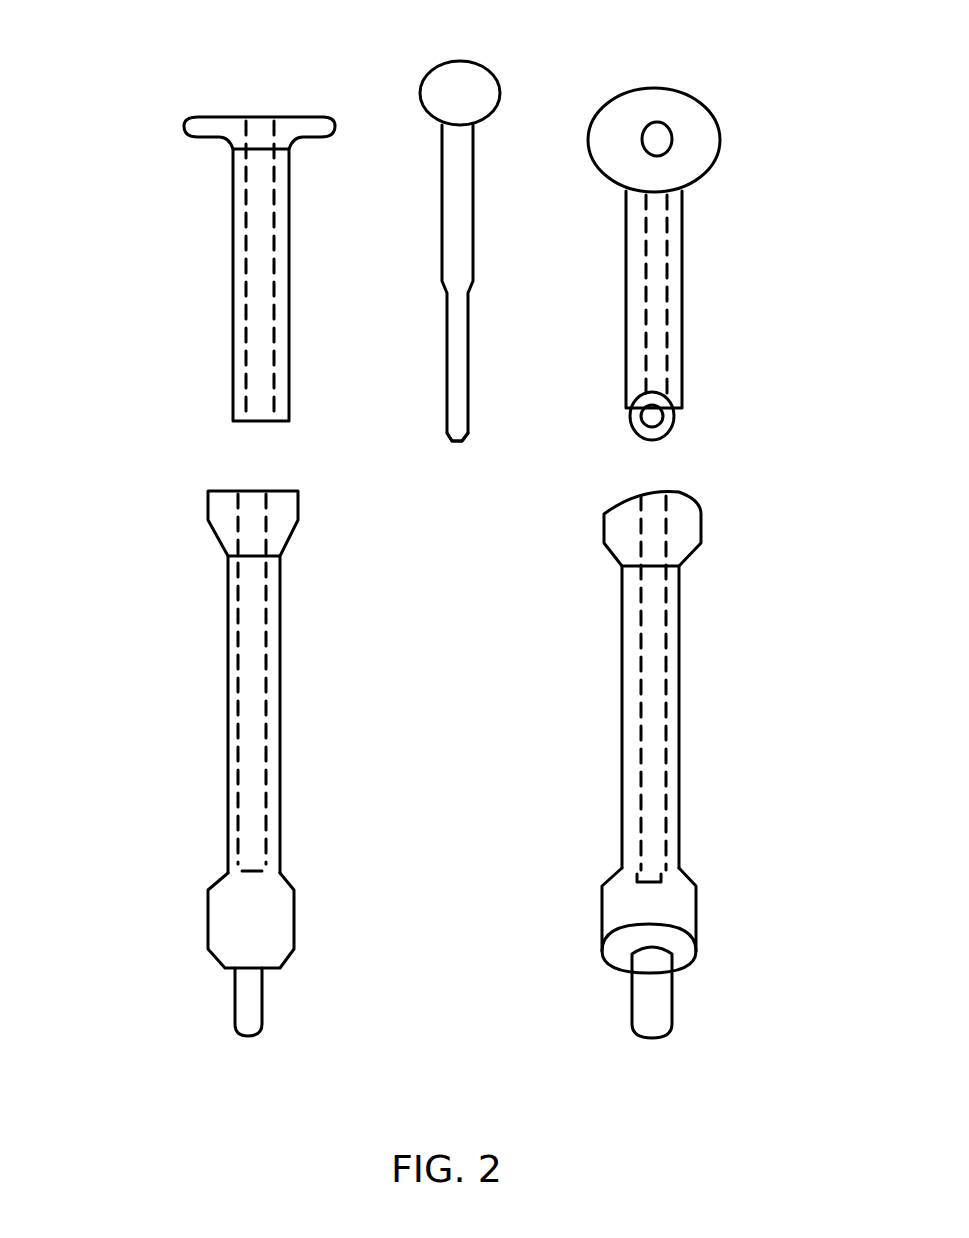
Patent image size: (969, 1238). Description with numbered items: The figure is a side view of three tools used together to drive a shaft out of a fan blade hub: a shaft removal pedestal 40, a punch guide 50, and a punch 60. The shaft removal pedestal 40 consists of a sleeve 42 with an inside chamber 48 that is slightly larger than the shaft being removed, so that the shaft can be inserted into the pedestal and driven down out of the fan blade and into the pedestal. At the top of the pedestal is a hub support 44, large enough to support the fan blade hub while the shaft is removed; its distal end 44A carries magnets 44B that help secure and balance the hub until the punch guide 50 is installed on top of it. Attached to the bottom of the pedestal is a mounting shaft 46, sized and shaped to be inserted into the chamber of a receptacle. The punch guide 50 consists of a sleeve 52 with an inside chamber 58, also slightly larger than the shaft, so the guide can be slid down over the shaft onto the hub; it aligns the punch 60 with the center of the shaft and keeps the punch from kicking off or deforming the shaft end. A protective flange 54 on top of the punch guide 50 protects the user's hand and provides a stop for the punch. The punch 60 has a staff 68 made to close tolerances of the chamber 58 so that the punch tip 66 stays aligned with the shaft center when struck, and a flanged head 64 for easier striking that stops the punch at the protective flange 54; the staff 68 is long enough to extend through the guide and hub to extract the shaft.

The shaft removal pedestal 40 is at (411, 737).
The sleeve 42 is at (614, 703).
The hub support 44 is at (596, 512).
The distal end 44A is at (198, 483).
The magnets 44B is at (275, 481).
The mounting shaft 46 is at (624, 987).
The inside chamber 48 is at (643, 795).
The punch guide 50 is at (456, 283).
The sleeve 52 is at (225, 230).
The protective flange 54 is at (176, 119).
The inside chamber 58 is at (255, 307).
The punch 60 is at (479, 253).
The flanged head 64 is at (492, 75).
The punch tip 66 is at (458, 431).
The staff 68 is at (468, 222).